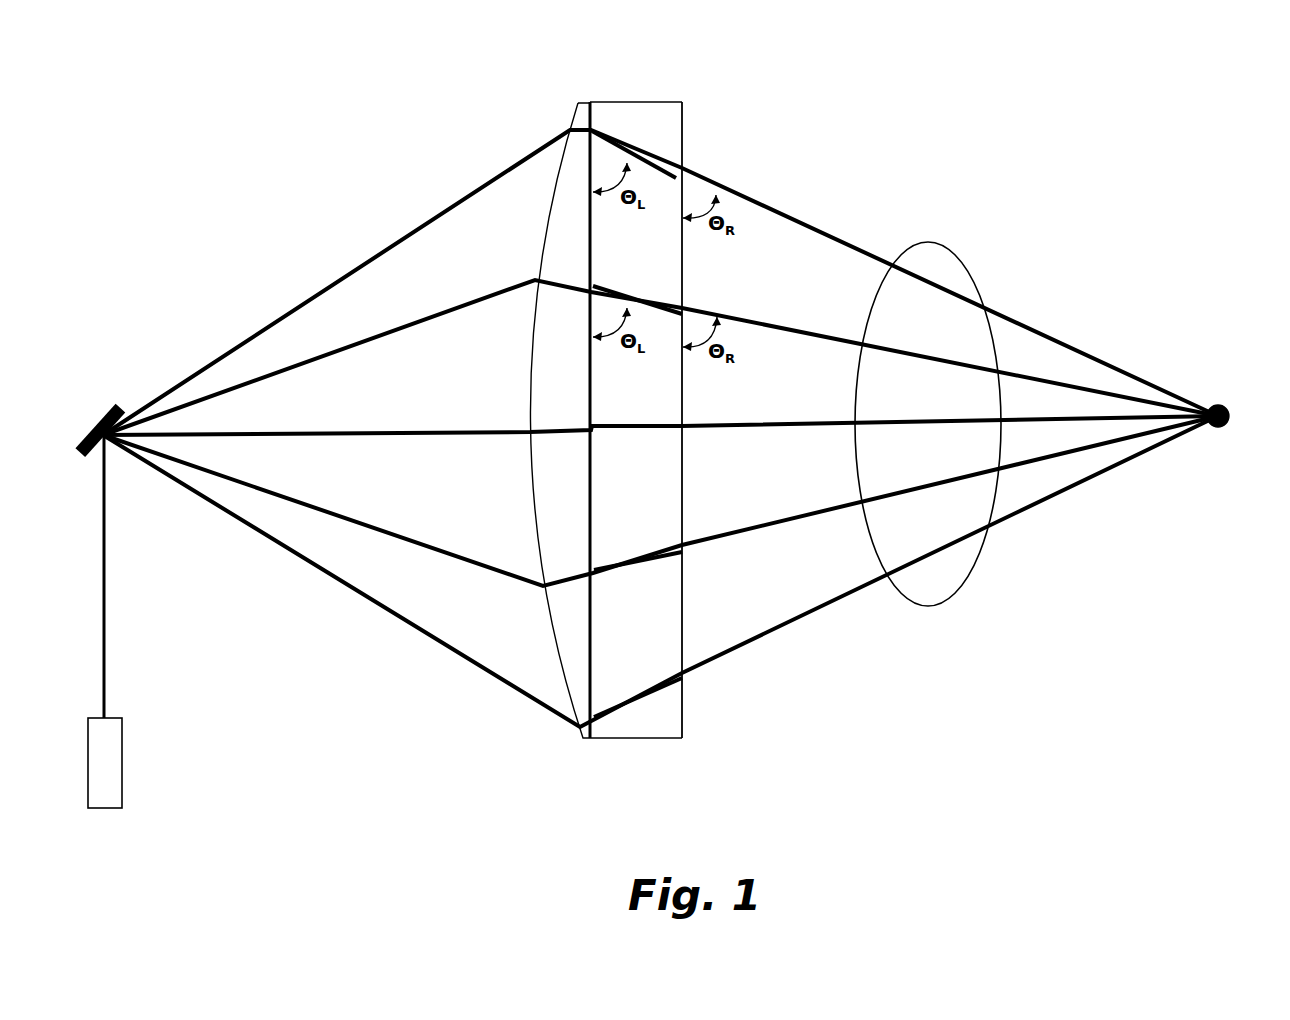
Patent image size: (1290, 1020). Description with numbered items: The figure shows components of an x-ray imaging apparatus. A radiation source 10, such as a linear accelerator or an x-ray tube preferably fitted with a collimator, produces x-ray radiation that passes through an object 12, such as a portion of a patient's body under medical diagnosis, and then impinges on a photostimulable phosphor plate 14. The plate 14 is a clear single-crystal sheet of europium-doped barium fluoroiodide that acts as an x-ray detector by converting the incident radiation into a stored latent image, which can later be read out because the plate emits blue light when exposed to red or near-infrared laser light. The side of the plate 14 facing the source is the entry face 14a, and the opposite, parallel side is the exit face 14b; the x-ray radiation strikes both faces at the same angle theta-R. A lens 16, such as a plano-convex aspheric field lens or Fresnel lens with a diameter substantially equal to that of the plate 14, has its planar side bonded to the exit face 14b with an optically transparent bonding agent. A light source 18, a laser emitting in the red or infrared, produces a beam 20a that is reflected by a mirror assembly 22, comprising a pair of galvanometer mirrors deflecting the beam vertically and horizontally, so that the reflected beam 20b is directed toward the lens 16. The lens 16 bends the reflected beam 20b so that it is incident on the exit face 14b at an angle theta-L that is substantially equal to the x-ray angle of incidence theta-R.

The radiation source 10 is at (1230, 410).
The object 12 is at (963, 262).
The photostimulable phosphor plate 14 is at (651, 501).
The entry face 14a is at (682, 144).
The exit face 14b is at (593, 598).
The lens 16 is at (530, 347).
The light source 18 is at (123, 755).
The beam 20a is at (105, 608).
The reflected beam 20b is at (298, 307).
The mirror assembly 22 is at (100, 422).